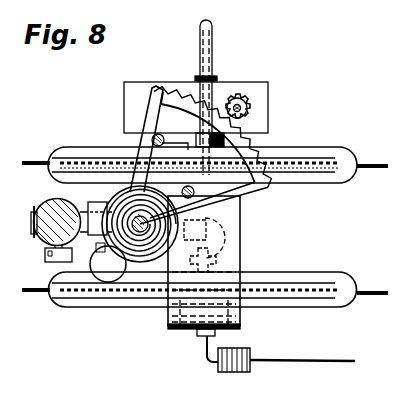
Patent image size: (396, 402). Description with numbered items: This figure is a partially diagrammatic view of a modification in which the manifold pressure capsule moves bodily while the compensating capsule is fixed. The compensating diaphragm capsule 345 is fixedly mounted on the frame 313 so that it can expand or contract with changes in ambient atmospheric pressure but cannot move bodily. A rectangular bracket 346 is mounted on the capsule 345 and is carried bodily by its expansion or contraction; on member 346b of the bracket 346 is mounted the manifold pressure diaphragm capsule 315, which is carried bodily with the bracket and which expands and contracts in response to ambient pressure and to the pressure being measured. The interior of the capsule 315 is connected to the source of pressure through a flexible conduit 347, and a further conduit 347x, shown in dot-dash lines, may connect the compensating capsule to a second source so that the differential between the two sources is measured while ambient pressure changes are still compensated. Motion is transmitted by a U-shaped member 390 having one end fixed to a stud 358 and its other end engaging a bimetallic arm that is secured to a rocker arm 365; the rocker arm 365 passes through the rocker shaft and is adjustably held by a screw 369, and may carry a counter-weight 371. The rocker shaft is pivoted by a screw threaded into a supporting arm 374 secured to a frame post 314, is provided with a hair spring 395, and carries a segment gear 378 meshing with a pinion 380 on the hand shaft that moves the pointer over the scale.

The conduit 347x is at (213, 40).
The frame 313 is at (253, 88).
The pinion 380 is at (250, 106).
The segment gear 378 is at (143, 101).
The compensating diaphragm capsule 345 is at (92, 132).
The manifold pressure diaphragm capsule 315 is at (57, 302).
The frame post 314 is at (50, 200).
The supporting arm 374 is at (42, 212).
The rocker arm 365 is at (35, 228).
The screw 369 is at (47, 262).
The counter-weight 371 is at (97, 208).
The hair spring 395 is at (152, 268).
The rectangular bracket 346 is at (242, 211).
The U-shaped member 390 is at (232, 237).
The stud 358 is at (218, 263).
The member of bracket 346b is at (242, 323).
The flexible conduit 347 is at (206, 353).